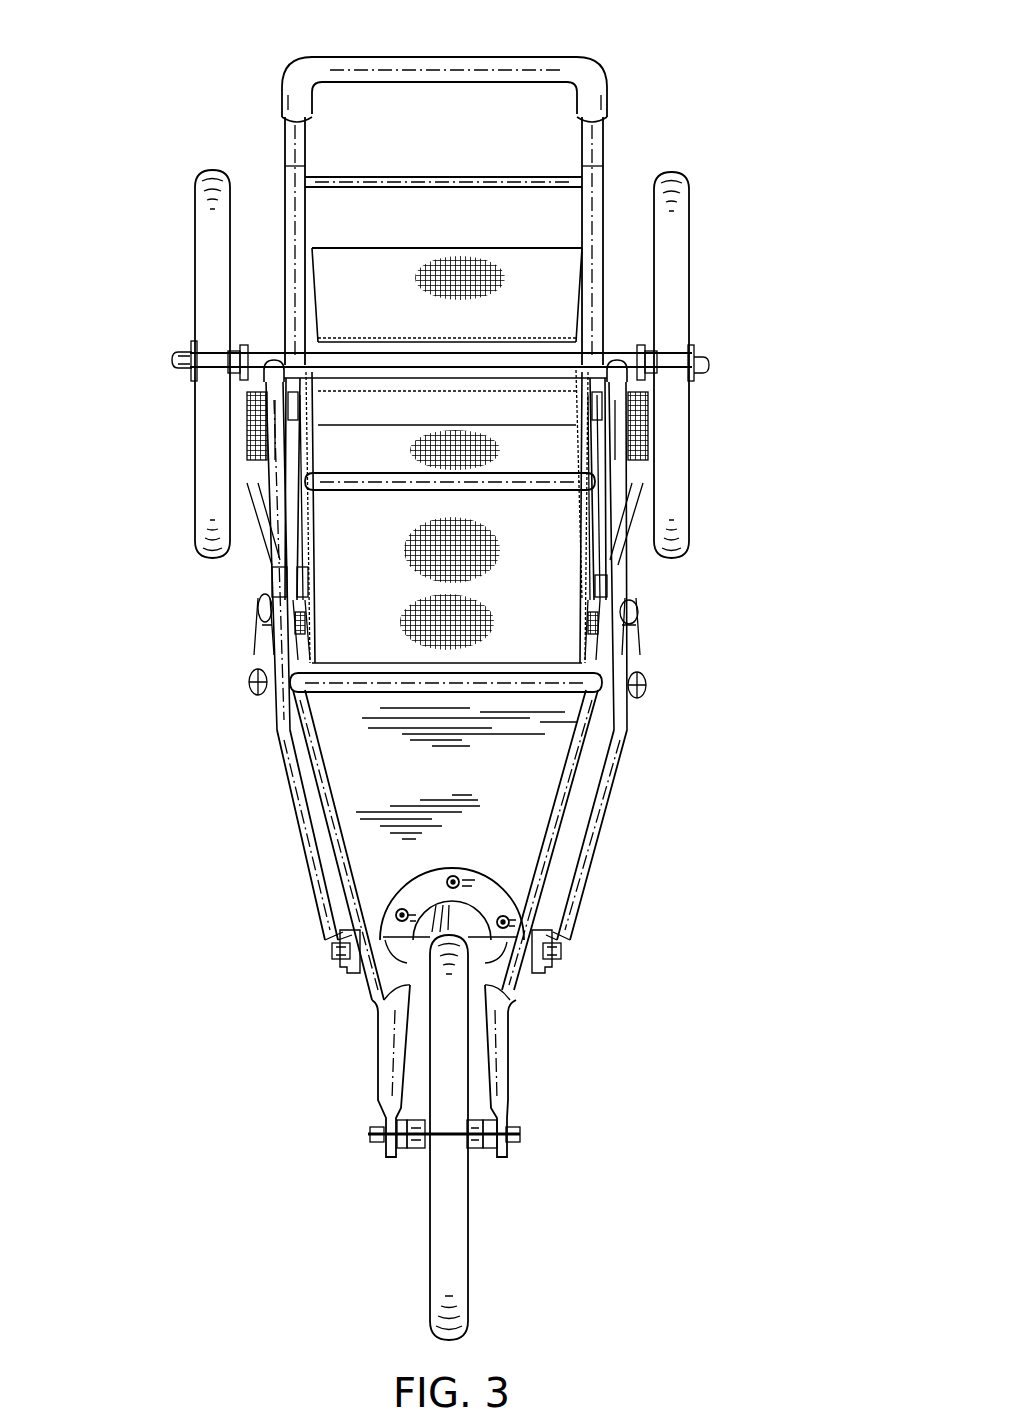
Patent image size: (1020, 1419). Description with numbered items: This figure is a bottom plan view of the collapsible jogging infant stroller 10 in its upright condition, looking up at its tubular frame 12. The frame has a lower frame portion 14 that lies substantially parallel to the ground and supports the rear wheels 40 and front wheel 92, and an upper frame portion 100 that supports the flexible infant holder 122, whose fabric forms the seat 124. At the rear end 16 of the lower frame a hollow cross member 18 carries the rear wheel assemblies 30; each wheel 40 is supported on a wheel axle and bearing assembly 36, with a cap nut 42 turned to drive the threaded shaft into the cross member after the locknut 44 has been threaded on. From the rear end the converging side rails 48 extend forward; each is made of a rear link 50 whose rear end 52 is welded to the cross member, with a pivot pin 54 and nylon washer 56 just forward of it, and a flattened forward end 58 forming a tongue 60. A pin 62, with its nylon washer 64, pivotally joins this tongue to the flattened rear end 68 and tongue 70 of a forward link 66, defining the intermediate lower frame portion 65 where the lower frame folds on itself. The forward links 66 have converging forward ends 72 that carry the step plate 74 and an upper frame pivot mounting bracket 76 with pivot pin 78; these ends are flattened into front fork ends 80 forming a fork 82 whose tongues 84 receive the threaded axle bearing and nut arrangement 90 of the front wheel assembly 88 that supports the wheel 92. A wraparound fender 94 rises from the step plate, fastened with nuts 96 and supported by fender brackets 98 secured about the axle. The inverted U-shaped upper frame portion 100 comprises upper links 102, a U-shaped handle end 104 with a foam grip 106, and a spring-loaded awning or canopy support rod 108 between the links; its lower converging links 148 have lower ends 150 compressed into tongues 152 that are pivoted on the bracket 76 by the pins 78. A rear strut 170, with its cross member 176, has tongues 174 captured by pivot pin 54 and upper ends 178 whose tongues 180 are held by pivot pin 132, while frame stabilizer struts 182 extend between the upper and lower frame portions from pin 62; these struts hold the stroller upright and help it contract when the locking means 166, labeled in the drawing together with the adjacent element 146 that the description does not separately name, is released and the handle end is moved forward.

The collapsible jogging infant stroller 10 is at (681, 70).
The tubular frame 12 is at (616, 342).
The lower frame portion 14 is at (273, 558).
The rear end 16 is at (411, 443).
The cross member 18 is at (302, 352).
The rear wheel assembly 30 is at (436, 328).
The wheel axle and bearing assembly 36 is at (436, 328).
The rear wheel 40 is at (195, 198).
The cap nut 42 is at (172, 357).
The locknut 44 is at (442, 339).
The side rails 48 is at (405, 576).
The rear link 50 is at (280, 463).
The rear end of rear link 52 is at (265, 377).
The pivot pin 54 is at (267, 398).
The nylon washer 56 is at (277, 417).
The forward end of rear link 58 is at (451, 613).
The tongue 60 is at (451, 613).
The pin 62 is at (260, 600).
The nylon washer 64 is at (463, 639).
The intermediate lower frame portion 65 is at (451, 613).
The forward link 66 is at (300, 760).
The rear end of forward link 68 is at (540, 633).
The tongue 70 is at (300, 612).
The forward end of forward link 72 is at (445, 957).
The step plate 74 is at (532, 812).
The upper frame pivot mounting bracket 76 is at (445, 957).
The pivot pin 78 is at (445, 957).
The front fork end 80 is at (440, 1071).
The fork 82 is at (440, 1071).
The tongue 84 is at (382, 1070).
The front wheel assembly 88 is at (422, 1163).
The threaded axle bearing and nut arrangement 90 is at (377, 1143).
The front wheel 92 is at (438, 1280).
The wraparound fender 94 is at (441, 934).
The nuts 96 is at (441, 934).
The fender bracket 98 is at (468, 908).
The upper frame portion 100 is at (603, 230).
The upper link 102 is at (292, 212).
The handle end 104 is at (444, 64).
The grip 106 is at (399, 56).
The awning or canopy support rod 108 is at (404, 177).
The flexible infant holder 122 is at (447, 577).
The seat 124 is at (313, 412).
The pivot pin 132 is at (317, 578).
The locking knob 146 is at (463, 695).
The lower converging link 148 is at (297, 848).
The lower end 150 is at (445, 957).
The tongue 152 is at (347, 925).
The locking means 166 is at (260, 647).
The rear strut 170 is at (595, 452).
The tongue 174 is at (580, 418).
The cross member 176 is at (345, 477).
The upper end 178 is at (317, 583).
The tongue 180 is at (587, 590).
The frame stabilizer strut 182 is at (463, 695).